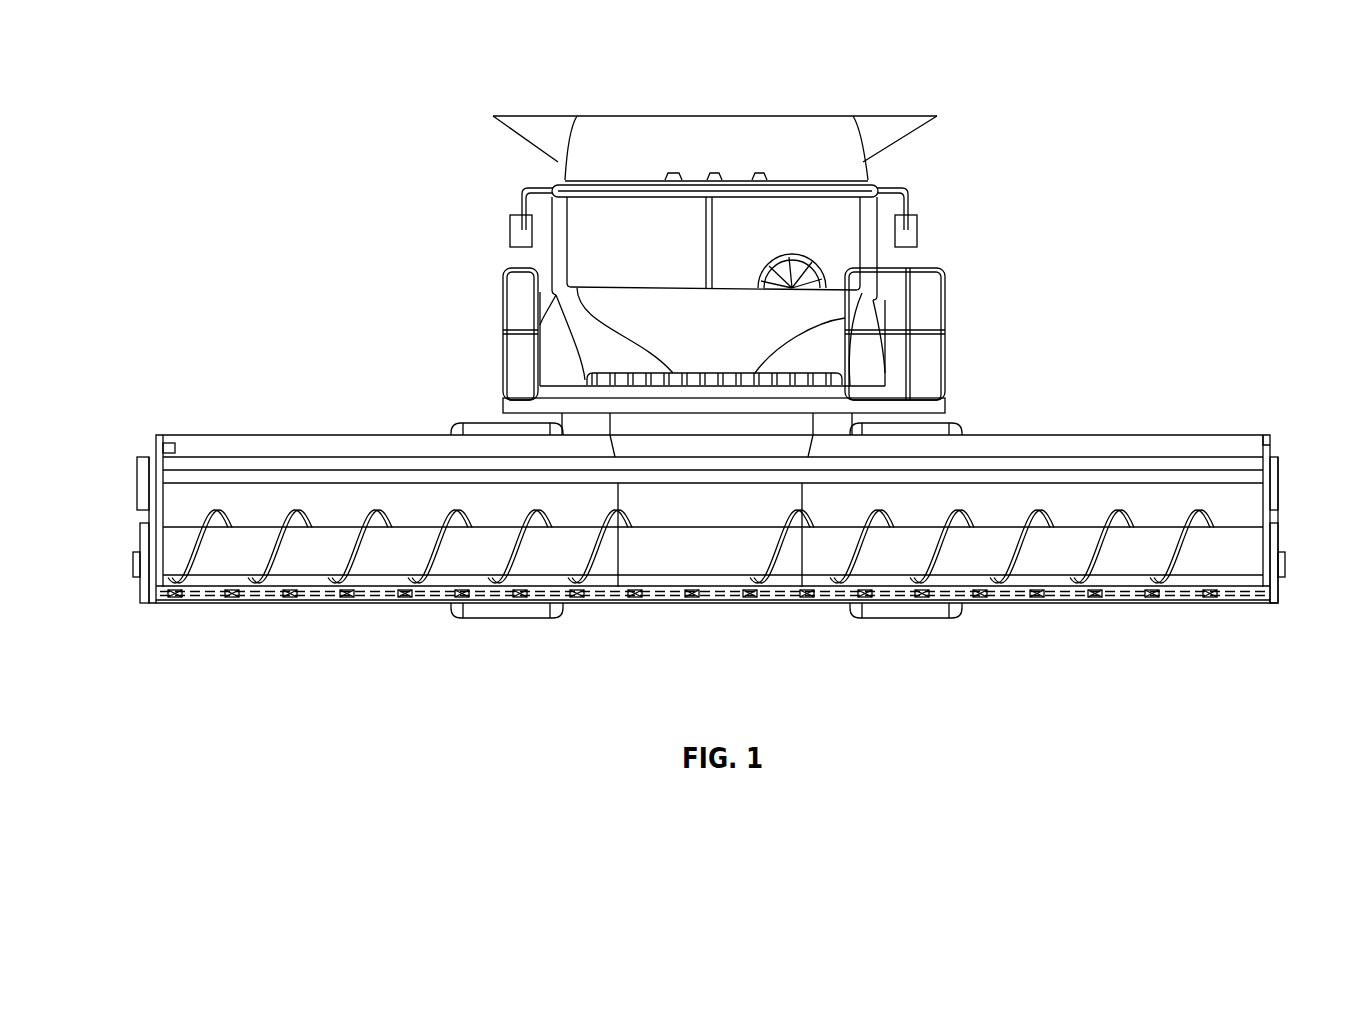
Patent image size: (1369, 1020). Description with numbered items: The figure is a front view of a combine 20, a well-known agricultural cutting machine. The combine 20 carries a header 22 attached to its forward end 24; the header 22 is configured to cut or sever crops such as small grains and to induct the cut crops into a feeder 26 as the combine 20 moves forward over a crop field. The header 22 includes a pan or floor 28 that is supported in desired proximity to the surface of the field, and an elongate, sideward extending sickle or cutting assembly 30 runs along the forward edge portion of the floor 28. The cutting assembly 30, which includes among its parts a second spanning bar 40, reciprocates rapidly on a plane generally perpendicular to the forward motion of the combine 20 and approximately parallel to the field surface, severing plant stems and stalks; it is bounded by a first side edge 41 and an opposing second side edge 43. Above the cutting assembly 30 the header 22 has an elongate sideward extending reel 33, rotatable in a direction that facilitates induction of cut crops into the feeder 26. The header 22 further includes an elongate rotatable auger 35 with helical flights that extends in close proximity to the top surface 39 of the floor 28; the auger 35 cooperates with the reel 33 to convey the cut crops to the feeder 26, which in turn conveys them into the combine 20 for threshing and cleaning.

The combine 20 is at (318, 122).
The header 22 is at (122, 480).
The forward end 24 is at (505, 405).
The feeder 26 is at (820, 425).
The floor 28 is at (308, 578).
The cutting assembly 30 is at (1132, 597).
The reel 33 is at (1273, 445).
The auger 35 is at (1228, 523).
The top surface 39 is at (225, 577).
The second spanning bar 40 is at (377, 587).
The first side edge 41 is at (153, 578).
The second side edge 43 is at (1272, 577).